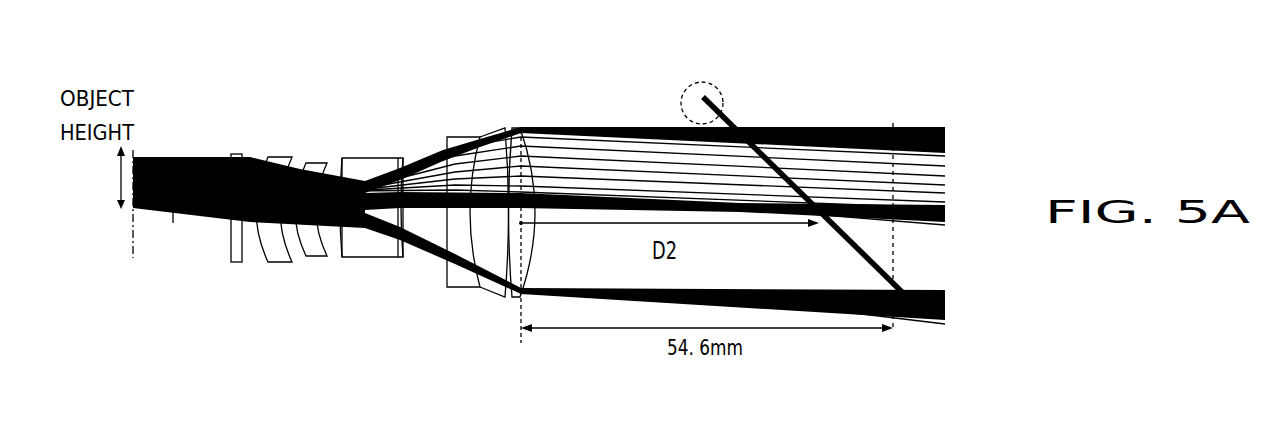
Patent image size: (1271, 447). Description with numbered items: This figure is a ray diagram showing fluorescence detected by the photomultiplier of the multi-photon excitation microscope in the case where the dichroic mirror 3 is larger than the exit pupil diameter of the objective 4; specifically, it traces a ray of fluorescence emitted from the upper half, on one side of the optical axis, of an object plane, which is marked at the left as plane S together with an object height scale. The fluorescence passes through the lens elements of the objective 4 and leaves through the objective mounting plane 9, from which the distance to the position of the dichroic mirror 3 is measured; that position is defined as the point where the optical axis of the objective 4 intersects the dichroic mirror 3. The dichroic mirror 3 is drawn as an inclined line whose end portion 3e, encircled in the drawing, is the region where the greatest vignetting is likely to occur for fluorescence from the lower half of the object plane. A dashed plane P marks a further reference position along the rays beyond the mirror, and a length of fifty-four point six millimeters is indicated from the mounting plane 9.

The object plane S is at (137, 174).
The objective 4 is at (296, 136).
The objective mounting plane 9 is at (521, 120).
The dichroic mirror 3 is at (773, 153).
The end portion of the dichroic mirror 3e is at (712, 76).
The pupil position P is at (893, 123).